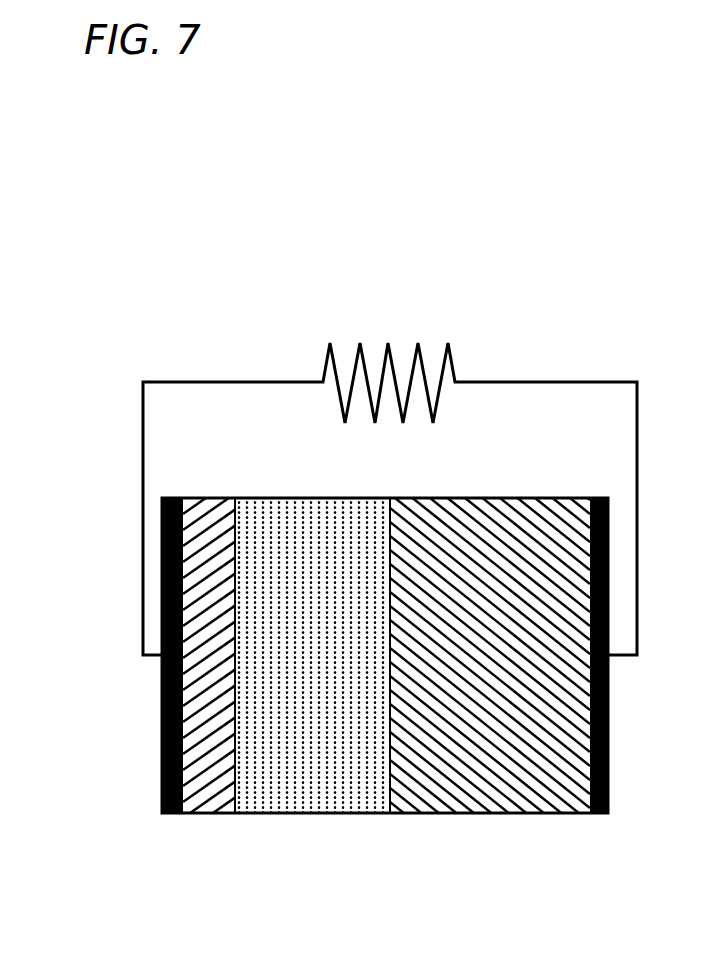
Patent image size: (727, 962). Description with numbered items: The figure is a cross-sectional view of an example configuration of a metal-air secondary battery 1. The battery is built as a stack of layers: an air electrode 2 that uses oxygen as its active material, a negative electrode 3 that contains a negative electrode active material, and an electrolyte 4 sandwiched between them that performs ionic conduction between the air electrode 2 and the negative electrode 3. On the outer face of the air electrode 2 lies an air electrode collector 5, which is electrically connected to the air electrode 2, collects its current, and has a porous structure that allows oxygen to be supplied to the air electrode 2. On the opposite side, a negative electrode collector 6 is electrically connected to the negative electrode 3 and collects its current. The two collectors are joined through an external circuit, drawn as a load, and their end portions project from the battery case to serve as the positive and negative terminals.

The metal-air secondary battery 1 is at (571, 232).
The air electrode 2 is at (495, 788).
The negative electrode 3 is at (222, 790).
The electrolyte 4 is at (315, 788).
The air electrode collector 5 is at (605, 815).
The negative electrode collector 6 is at (173, 815).